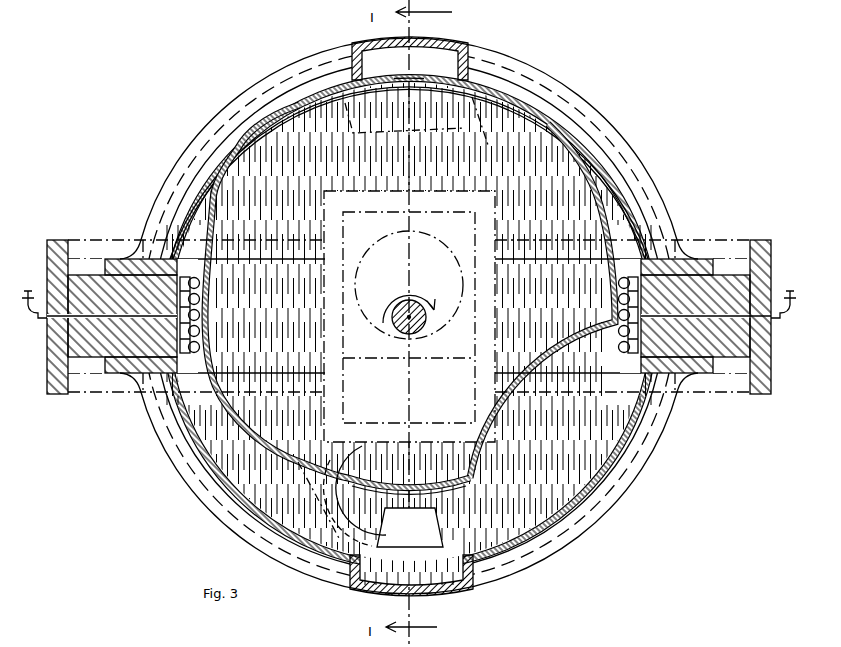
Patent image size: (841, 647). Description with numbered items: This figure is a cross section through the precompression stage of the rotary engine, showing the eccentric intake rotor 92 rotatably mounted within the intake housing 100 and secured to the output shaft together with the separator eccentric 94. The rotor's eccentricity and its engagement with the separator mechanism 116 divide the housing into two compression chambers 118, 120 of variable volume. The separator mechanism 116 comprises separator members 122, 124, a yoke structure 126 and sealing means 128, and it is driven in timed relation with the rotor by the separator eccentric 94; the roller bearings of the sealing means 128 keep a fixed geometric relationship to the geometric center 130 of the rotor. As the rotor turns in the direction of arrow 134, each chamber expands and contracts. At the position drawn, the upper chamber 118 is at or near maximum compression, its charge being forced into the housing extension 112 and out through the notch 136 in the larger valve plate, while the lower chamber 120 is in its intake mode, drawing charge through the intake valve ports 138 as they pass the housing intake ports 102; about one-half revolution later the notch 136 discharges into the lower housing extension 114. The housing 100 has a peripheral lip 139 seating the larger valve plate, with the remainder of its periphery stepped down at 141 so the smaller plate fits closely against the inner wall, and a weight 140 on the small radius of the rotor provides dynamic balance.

The eccentric intake rotor 92 is at (529, 457).
The separator eccentric 94 is at (462, 278).
The intake housing 100 is at (637, 165).
The intake ports 102 is at (391, 318).
The upper housing extension 112 is at (449, 37).
The lower housing extension 114 is at (445, 590).
The separator mechanism 116 is at (763, 238).
The upper compression chamber 118 is at (597, 170).
The lower compression chamber 120 is at (518, 513).
The first separator member 122 is at (97, 343).
The second separator member 124 is at (731, 350).
The yoke structure 126 is at (681, 237).
The sealing means 128 is at (203, 352).
The geometric center 130 is at (413, 289).
The rotation arrow 134 is at (387, 298).
The discharge notch 136 is at (398, 74).
The intake valve ports 138 is at (341, 453).
The peripheral lip 139 is at (530, 84).
The balancing weight 140 is at (414, 480).
The stepped-down housing periphery 141 is at (568, 127).